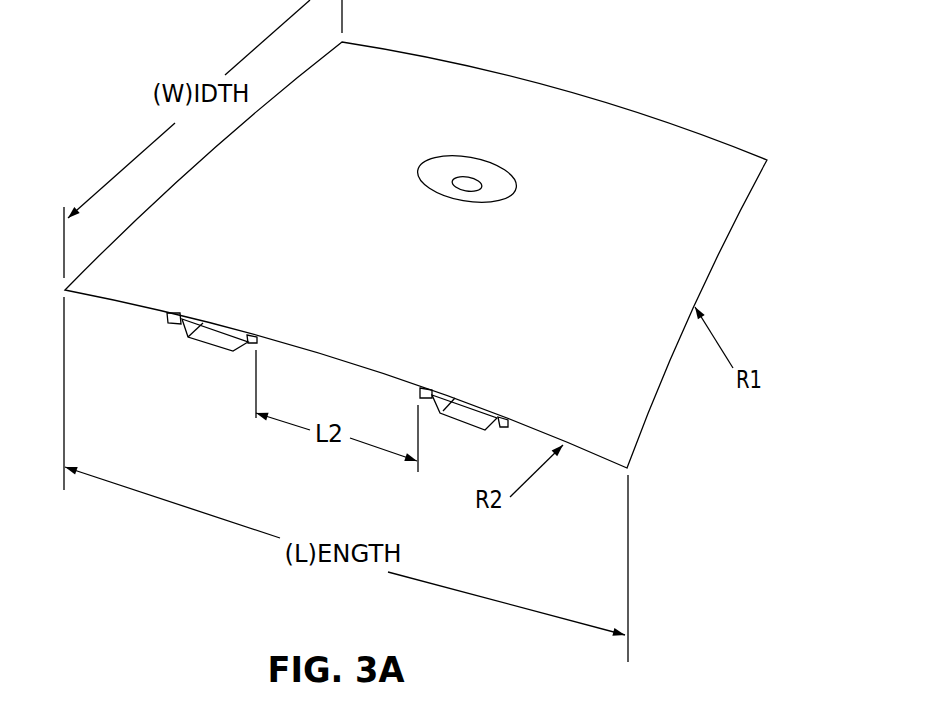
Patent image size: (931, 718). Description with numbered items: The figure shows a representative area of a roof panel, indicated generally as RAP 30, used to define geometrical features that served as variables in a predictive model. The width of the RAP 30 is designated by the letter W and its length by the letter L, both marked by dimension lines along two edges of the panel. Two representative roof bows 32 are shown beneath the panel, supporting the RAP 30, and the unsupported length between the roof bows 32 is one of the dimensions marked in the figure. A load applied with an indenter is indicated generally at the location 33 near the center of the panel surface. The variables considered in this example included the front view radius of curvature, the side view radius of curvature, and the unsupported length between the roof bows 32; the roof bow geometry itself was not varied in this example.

The representative area of panel (RAP) 30 is at (597, 98).
The roof bow 32 is at (210, 345).
The load applied with an indenter 33 is at (470, 182).